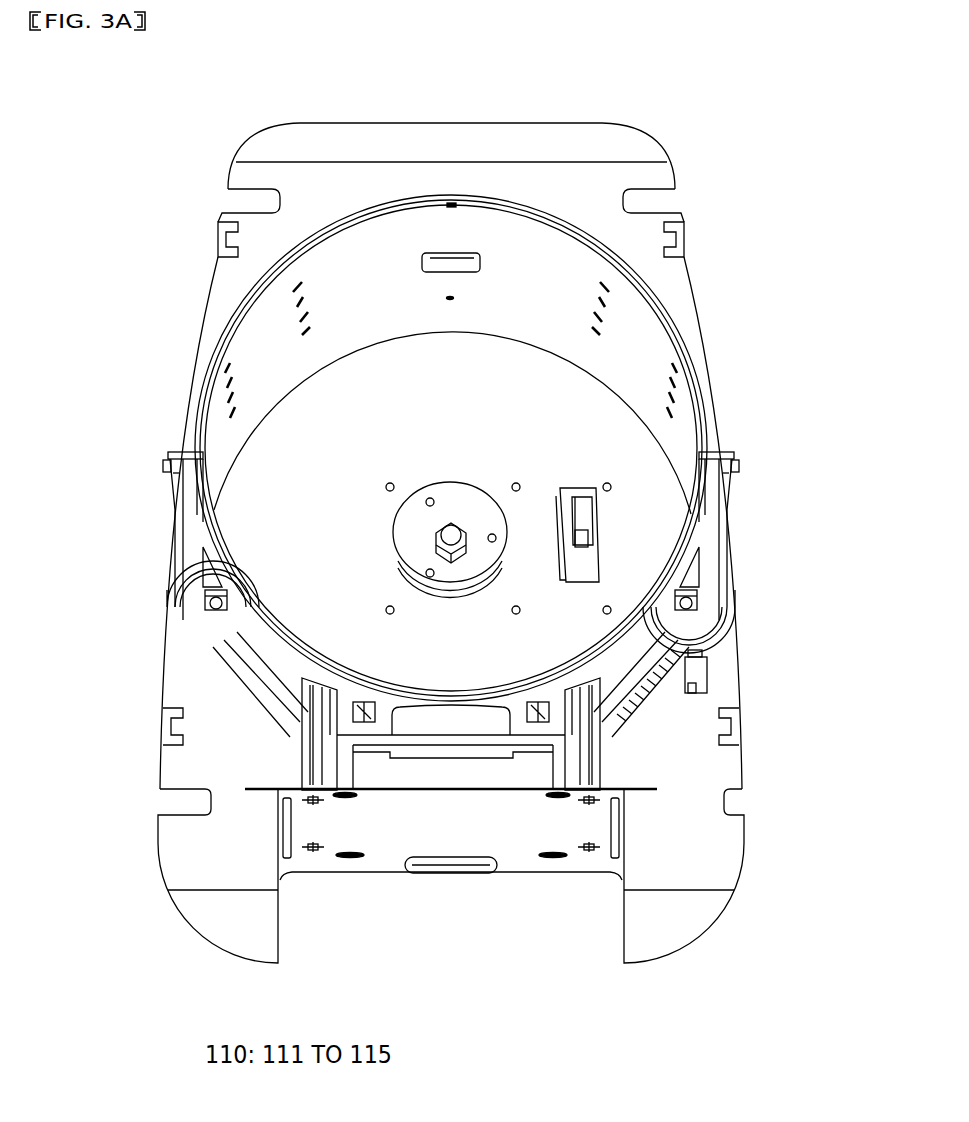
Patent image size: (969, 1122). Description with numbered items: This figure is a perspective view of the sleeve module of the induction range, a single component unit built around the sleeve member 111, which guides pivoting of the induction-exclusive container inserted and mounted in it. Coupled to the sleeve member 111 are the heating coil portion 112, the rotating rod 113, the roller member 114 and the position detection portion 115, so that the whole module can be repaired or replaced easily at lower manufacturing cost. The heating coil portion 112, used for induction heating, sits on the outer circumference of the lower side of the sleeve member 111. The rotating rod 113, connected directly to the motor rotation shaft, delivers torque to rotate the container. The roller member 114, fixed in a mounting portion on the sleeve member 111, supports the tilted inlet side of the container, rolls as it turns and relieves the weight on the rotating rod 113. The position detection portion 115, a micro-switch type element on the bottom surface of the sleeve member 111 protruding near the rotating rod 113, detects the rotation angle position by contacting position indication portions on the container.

The sleeve member 111 is at (627, 347).
The heating coil portion 112 is at (485, 778).
The rotating rod 113 is at (450, 533).
The roller member 114 is at (253, 585).
The position detection portion 115 is at (582, 515).